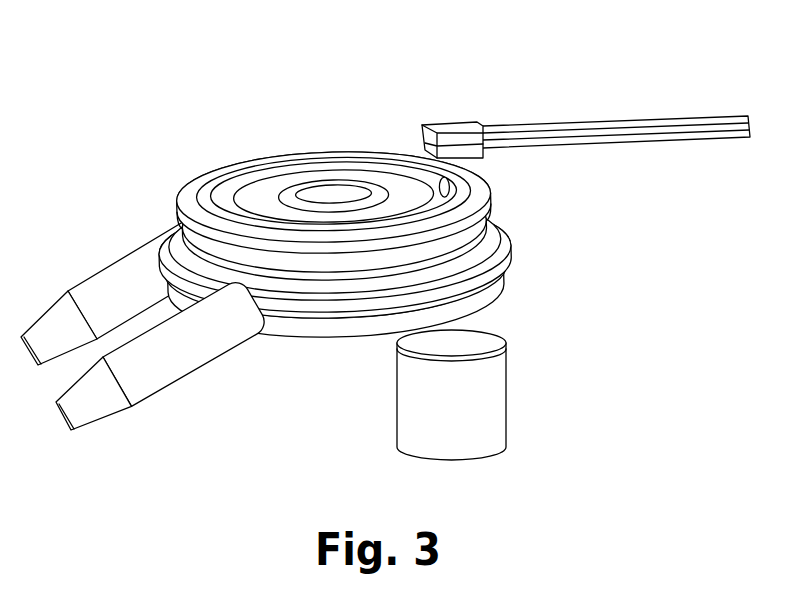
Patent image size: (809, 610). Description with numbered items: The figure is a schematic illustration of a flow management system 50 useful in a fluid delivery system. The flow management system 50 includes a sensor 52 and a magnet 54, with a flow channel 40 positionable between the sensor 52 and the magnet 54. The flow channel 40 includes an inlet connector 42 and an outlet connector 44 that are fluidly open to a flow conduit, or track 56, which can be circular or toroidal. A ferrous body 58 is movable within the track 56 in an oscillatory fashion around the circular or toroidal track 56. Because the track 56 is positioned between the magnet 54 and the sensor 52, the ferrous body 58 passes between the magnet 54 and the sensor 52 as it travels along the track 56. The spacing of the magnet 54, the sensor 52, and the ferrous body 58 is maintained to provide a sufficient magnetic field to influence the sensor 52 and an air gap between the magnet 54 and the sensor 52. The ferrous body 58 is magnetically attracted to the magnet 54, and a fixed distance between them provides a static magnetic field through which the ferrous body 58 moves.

The flow channel 40 is at (360, 261).
The inlet connector 42 is at (163, 377).
The outlet connector 44 is at (122, 310).
The flow management system 50 is at (385, 241).
The sensor 52 is at (472, 121).
The magnet 54 is at (506, 388).
The track 56 is at (336, 290).
The ferrous body 58 is at (475, 179).